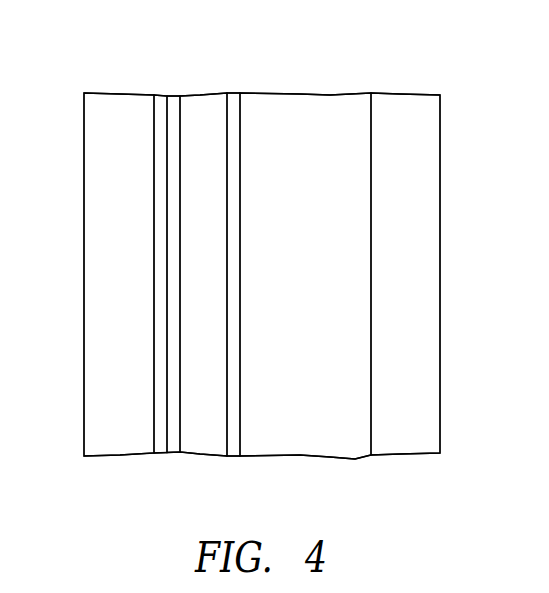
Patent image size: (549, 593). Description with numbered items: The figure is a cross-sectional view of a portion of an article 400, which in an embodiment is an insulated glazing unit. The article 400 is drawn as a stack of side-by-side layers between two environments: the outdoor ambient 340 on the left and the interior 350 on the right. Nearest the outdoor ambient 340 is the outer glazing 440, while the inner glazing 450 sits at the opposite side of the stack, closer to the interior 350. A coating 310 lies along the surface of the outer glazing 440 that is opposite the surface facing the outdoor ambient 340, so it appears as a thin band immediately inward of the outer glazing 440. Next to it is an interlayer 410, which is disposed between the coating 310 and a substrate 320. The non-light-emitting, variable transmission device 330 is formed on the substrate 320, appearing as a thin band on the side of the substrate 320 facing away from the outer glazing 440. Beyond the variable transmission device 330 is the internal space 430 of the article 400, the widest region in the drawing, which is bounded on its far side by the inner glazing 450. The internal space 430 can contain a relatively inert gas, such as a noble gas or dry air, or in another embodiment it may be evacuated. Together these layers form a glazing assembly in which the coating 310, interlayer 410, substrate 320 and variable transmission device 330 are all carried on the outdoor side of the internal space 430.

The article 400 is at (428, 52).
The outer glazing 440 is at (142, 295).
The coating 310 is at (162, 203).
The interlayer 410 is at (172, 398).
The substrate 320 is at (217, 295).
The non-light-emitting, variable transmission device 330 is at (237, 222).
The internal space 430 is at (318, 295).
The inner glazing 450 is at (420, 297).
The outdoor ambient 340 is at (66, 288).
The interior 350 is at (513, 287).